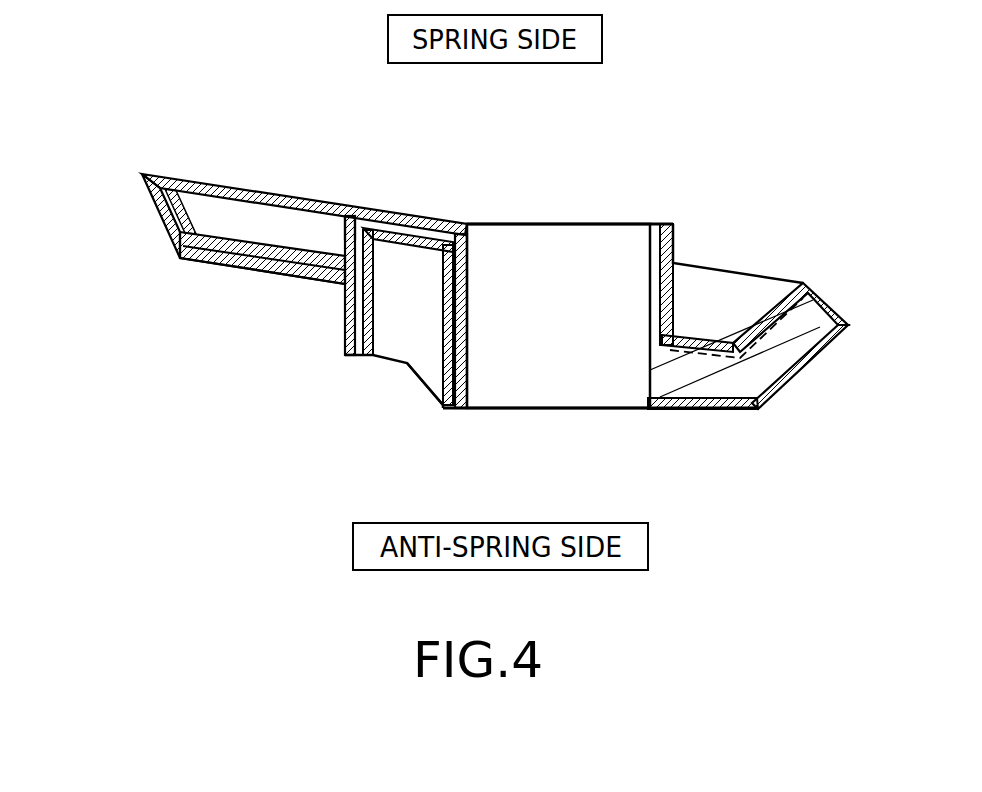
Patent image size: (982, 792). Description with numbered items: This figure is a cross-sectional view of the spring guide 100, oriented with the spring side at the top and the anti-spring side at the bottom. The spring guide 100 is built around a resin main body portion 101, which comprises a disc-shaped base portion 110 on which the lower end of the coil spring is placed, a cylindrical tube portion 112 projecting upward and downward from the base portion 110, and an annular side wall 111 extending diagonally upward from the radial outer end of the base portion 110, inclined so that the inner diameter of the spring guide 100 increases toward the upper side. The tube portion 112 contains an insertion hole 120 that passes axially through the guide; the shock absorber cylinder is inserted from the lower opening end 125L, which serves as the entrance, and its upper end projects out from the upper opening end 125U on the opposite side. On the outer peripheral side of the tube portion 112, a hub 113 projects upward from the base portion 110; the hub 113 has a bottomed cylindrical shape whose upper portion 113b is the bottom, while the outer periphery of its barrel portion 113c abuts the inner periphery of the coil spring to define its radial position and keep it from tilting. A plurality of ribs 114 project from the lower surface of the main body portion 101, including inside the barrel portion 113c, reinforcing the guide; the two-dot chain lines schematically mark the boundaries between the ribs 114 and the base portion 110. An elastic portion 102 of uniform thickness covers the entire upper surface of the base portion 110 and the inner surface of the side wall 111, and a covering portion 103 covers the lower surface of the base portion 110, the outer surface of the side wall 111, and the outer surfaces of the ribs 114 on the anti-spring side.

The spring guide 100 is at (717, 198).
The main body portion 101 is at (300, 254).
The elastic portion 102 is at (215, 232).
The covering portion 103 is at (200, 264).
The base portion 110 is at (270, 272).
The side wall 111 is at (163, 221).
The tube portion 112 is at (440, 372).
The hub 113 is at (344, 340).
The upper portion 113b is at (424, 220).
The barrel portion 113c is at (347, 206).
The ribs 114 is at (787, 343).
The insertion hole 120 is at (482, 250).
The upper opening end 125U is at (603, 224).
The lower opening end 125L is at (587, 400).